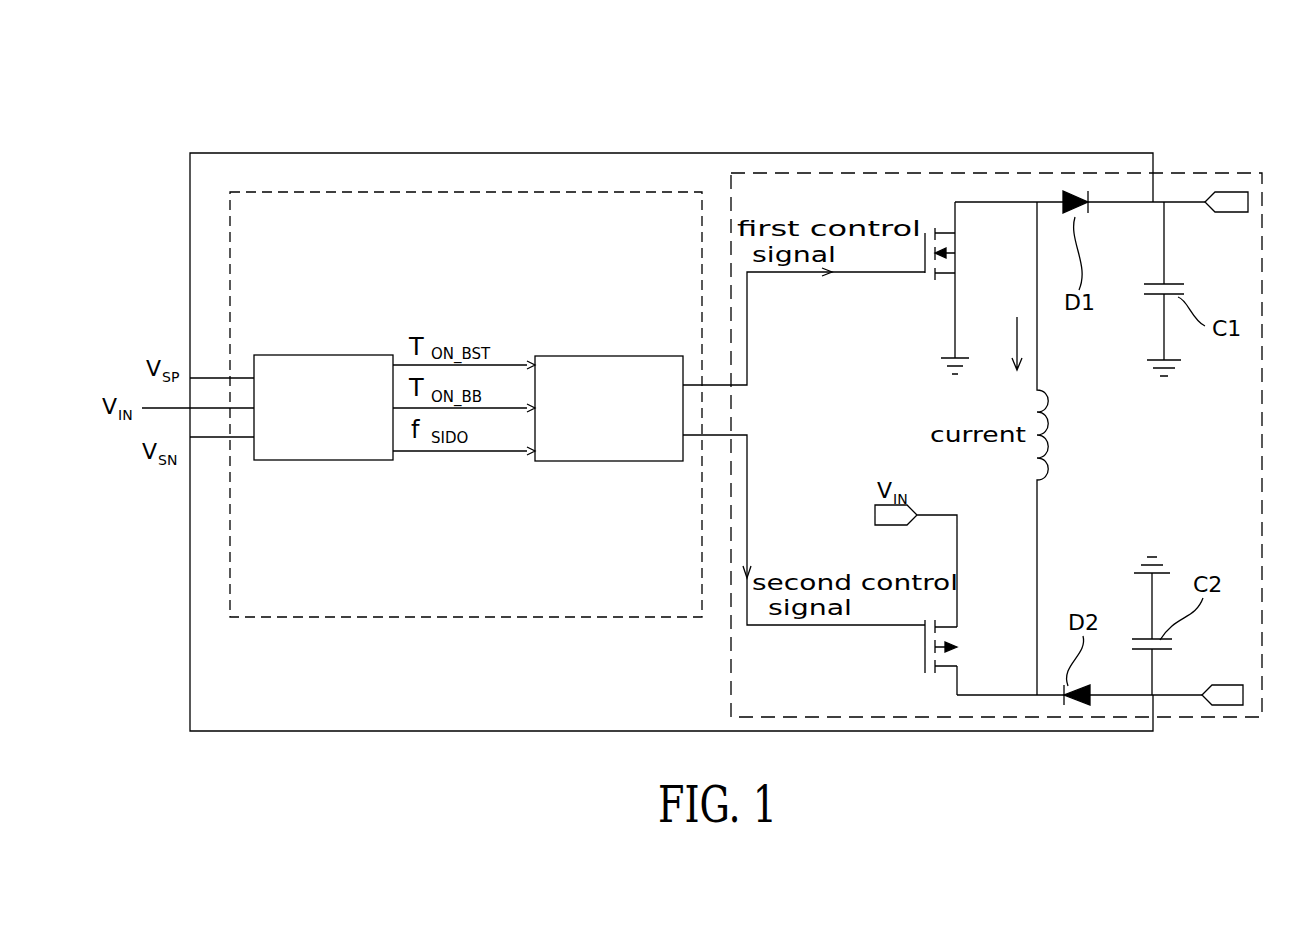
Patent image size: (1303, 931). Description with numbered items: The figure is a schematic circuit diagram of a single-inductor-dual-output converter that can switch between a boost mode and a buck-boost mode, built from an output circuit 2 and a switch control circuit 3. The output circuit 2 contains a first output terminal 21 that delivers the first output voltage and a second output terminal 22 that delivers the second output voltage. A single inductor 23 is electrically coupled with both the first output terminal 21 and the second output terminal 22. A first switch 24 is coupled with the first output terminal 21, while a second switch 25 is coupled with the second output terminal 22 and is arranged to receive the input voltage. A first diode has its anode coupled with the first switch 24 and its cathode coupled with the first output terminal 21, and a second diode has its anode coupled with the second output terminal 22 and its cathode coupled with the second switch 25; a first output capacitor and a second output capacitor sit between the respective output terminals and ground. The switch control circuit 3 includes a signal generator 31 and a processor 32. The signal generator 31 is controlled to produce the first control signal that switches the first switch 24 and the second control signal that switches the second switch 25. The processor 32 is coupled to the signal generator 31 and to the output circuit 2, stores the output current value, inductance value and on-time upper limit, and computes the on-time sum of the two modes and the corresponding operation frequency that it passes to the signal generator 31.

The output circuit 2 is at (1038, 172).
The switch control circuit 3 is at (513, 192).
The first output terminal 21 is at (1228, 192).
The second output terminal 22 is at (1222, 706).
The inductor 23 is at (1045, 470).
The first switch 24 is at (957, 262).
The second switch 25 is at (960, 627).
The signal generator 31 is at (628, 356).
The processor 32 is at (346, 355).